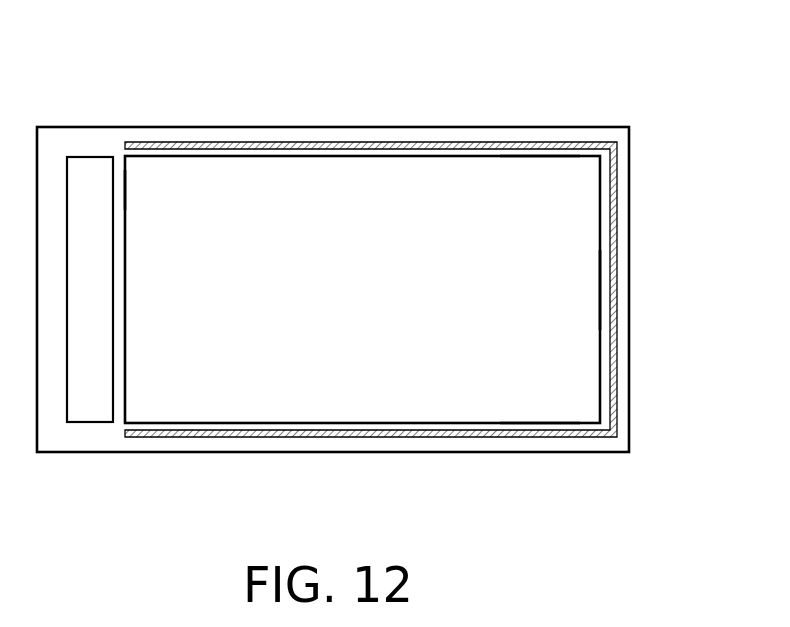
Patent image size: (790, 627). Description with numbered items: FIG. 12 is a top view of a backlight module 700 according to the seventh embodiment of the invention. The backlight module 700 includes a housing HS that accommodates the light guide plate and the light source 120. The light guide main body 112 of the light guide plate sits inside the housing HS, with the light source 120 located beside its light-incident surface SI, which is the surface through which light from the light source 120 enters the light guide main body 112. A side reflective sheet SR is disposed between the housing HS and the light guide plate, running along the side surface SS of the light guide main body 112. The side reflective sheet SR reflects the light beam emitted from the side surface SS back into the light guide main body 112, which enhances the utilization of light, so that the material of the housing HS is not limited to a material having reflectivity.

The backlight module 700 is at (372, 293).
The housing HS is at (427, 128).
The light source 120 is at (78, 180).
The side reflective sheet SR is at (487, 146).
The light guide main body 112 is at (326, 178).
The light-incident surface SI is at (122, 190).
The side surface SS is at (537, 154).